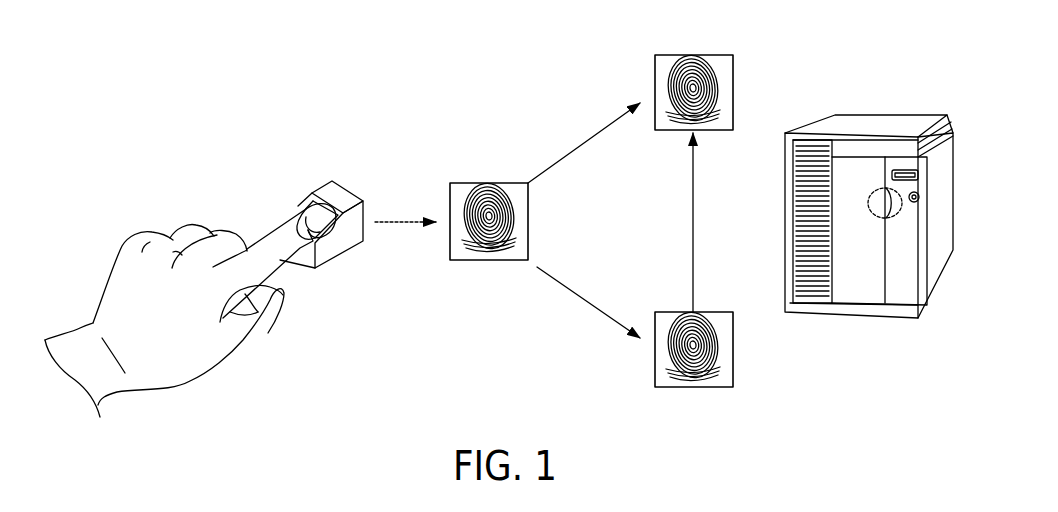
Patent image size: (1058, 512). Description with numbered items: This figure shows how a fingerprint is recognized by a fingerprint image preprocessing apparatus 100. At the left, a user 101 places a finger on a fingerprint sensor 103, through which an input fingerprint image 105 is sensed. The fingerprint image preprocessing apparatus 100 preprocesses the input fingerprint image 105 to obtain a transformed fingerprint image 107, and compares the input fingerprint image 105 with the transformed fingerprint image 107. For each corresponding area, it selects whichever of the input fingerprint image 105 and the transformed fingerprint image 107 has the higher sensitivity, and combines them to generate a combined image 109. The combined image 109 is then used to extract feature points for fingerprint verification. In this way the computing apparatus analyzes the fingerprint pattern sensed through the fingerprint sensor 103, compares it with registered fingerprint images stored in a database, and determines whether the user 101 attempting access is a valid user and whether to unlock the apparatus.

The fingerprint image preprocessing apparatus 100 is at (890, 113).
The user 101 is at (243, 350).
The fingerprint sensor 103 is at (347, 193).
The input fingerprint image 105 is at (528, 220).
The transformed fingerprint image 107 is at (703, 312).
The combined image 109 is at (707, 53).